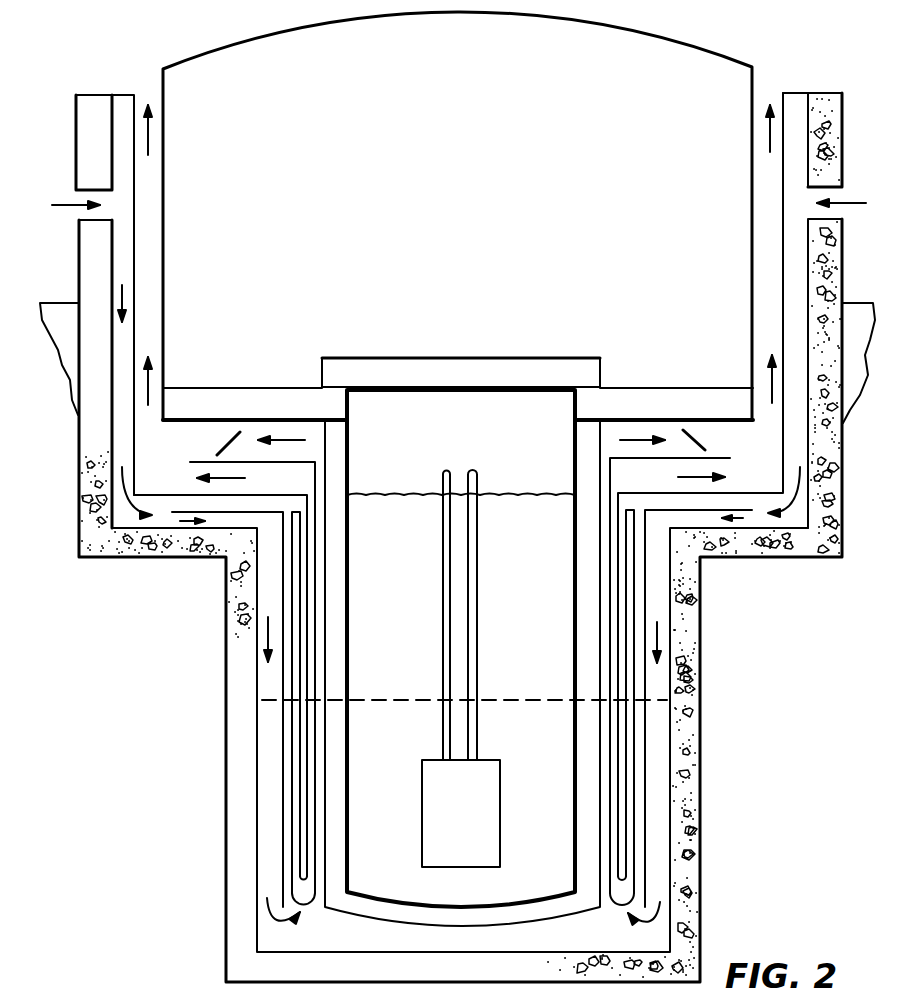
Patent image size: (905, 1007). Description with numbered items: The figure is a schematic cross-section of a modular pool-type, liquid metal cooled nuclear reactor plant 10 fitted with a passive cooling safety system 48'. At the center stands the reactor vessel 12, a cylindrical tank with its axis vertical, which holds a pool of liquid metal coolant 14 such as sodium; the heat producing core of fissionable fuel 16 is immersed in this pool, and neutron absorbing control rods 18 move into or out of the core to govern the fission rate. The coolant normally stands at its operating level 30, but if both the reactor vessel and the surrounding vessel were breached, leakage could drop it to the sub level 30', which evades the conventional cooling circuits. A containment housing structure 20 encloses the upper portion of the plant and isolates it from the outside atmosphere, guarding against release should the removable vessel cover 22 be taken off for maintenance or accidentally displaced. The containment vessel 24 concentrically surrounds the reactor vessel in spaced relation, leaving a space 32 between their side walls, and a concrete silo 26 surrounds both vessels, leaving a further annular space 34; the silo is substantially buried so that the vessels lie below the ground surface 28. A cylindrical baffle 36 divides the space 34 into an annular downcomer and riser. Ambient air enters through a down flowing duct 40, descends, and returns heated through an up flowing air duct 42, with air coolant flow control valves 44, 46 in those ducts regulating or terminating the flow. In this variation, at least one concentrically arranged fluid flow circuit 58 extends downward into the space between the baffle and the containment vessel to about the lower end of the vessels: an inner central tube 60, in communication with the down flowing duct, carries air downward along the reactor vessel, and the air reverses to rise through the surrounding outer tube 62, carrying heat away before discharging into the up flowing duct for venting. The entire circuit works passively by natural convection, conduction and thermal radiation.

The nuclear reactor plant 10 is at (675, 33).
The reactor vessel 12 is at (573, 465).
The liquid metal coolant 14 is at (552, 828).
The core of fissionable fuel 16 is at (475, 828).
The control rods 18 is at (478, 602).
The containment housing structure 20 is at (350, 24).
The vessel cover 22 is at (534, 358).
The containment vessel 24 is at (600, 627).
The concrete silo 26 is at (702, 677).
The ground surface 28 is at (862, 372).
The normal operating level 30 is at (461, 467).
The sub level 30' is at (464, 672).
The space 32 is at (590, 827).
The space 34 is at (657, 903).
The cylindrical baffle 36 is at (648, 875).
The down flowing duct 40 is at (125, 450).
The up flowing air duct 42 is at (152, 310).
The air coolant flow control valve 44 is at (183, 522).
The air coolant flow control valve 46 is at (225, 440).
The passive cooling safety system 48' is at (457, 708).
The fluid flow circuit 58 is at (318, 637).
The inner central tube 60 is at (300, 597).
The outer tube 62 is at (318, 540).